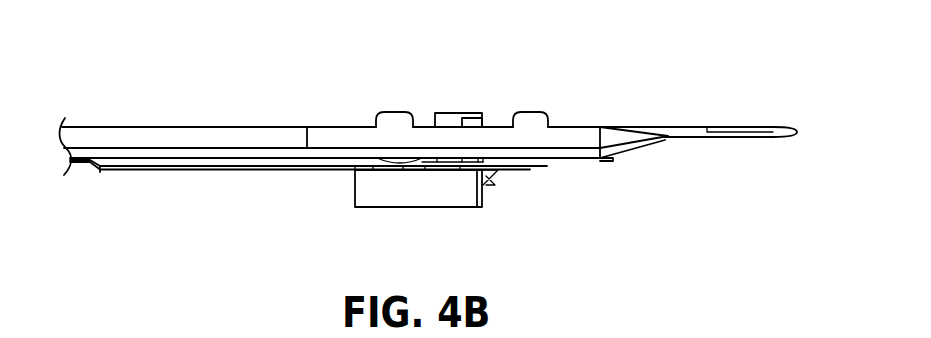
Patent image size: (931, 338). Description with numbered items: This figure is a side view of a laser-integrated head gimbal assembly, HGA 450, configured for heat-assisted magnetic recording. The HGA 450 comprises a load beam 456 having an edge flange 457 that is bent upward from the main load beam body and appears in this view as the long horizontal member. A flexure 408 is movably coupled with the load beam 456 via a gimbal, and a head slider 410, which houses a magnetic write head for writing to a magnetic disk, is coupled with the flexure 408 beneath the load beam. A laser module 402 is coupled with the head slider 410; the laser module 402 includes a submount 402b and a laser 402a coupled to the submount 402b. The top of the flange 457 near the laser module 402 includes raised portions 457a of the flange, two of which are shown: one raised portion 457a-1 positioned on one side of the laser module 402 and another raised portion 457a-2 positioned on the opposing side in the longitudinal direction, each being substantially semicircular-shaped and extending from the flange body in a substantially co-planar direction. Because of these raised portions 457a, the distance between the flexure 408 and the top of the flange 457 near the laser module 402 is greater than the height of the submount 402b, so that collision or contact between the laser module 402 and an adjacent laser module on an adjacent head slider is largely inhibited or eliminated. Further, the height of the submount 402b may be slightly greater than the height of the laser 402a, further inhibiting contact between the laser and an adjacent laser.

The HGA 450 is at (131, 33).
The load beam 456 is at (73, 153).
The edge flange 457 is at (170, 138).
The raised portion 457a-1 is at (390, 117).
The raised portion 457a-2 is at (535, 118).
The raised portion 457a is at (667, 108).
The laser module 402 is at (493, 40).
The submount 402b is at (442, 113).
The laser 402a is at (468, 122).
The flexure 408 is at (152, 168).
The head slider 410 is at (363, 188).